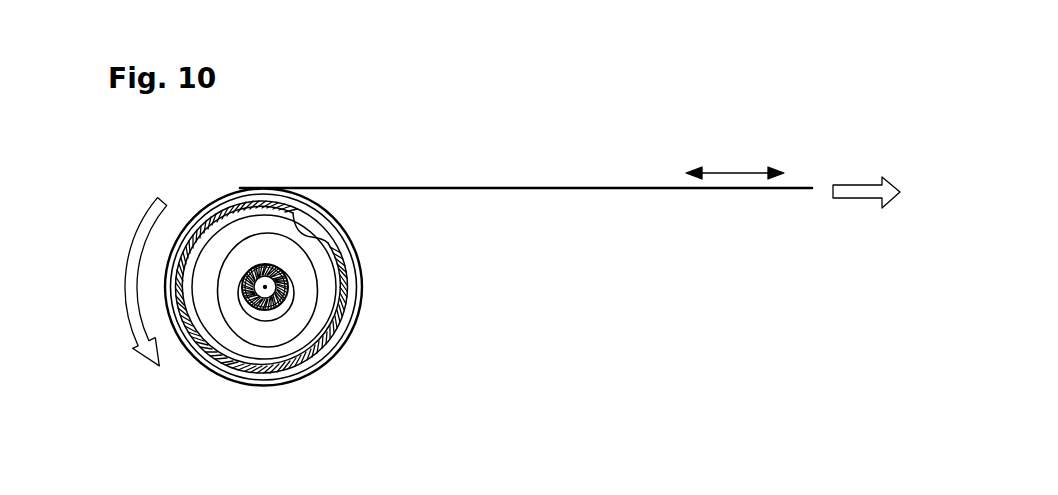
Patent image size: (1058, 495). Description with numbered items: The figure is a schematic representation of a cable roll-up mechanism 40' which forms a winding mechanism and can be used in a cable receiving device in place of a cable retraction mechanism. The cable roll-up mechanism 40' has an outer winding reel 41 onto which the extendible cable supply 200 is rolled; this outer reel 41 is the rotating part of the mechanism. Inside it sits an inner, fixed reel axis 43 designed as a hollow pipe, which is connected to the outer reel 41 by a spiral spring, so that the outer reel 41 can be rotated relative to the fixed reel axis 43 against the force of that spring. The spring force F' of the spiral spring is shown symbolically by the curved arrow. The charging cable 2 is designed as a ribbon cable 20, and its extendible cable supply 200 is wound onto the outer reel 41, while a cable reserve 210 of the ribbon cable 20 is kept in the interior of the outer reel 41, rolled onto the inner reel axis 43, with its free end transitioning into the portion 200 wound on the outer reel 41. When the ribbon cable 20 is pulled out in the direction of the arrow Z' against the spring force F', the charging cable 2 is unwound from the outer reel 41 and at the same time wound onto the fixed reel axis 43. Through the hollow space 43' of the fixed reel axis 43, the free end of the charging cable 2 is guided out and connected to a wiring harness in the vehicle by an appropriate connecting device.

The cable roll-up mechanism 40' is at (315, 255).
The ribbon cable 20 is at (478, 184).
The charging cable 2 is at (596, 184).
The outer winding reel 41 is at (312, 237).
The inner fixed reel axis 43 is at (302, 349).
The hollow space 43' is at (220, 355).
The extendible cable supply 200 is at (357, 333).
The cable reserve 210 is at (289, 348).
The spring force F' is at (127, 282).
The pull-out direction Z' is at (866, 181).